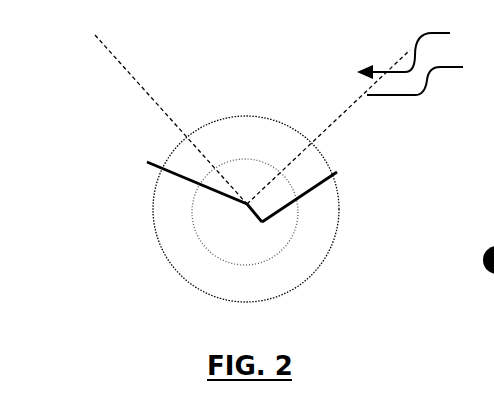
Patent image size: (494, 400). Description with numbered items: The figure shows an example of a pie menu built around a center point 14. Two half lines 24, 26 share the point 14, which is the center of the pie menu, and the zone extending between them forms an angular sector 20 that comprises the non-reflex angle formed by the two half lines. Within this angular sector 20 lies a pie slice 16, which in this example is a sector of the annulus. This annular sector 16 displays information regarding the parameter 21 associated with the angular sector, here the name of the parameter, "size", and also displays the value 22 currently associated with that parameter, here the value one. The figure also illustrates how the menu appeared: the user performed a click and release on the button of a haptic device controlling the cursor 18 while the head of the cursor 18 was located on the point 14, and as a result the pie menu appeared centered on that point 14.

The point 14 is at (148, 162).
The pie slice 16 is at (240, 116).
The cursor 18 is at (337, 172).
The angular sector 20 is at (422, 51).
The parameter 21 is at (220, 130).
The value 22 is at (315, 138).
The half line 24 is at (128, 72).
The half line 26 is at (430, 76).